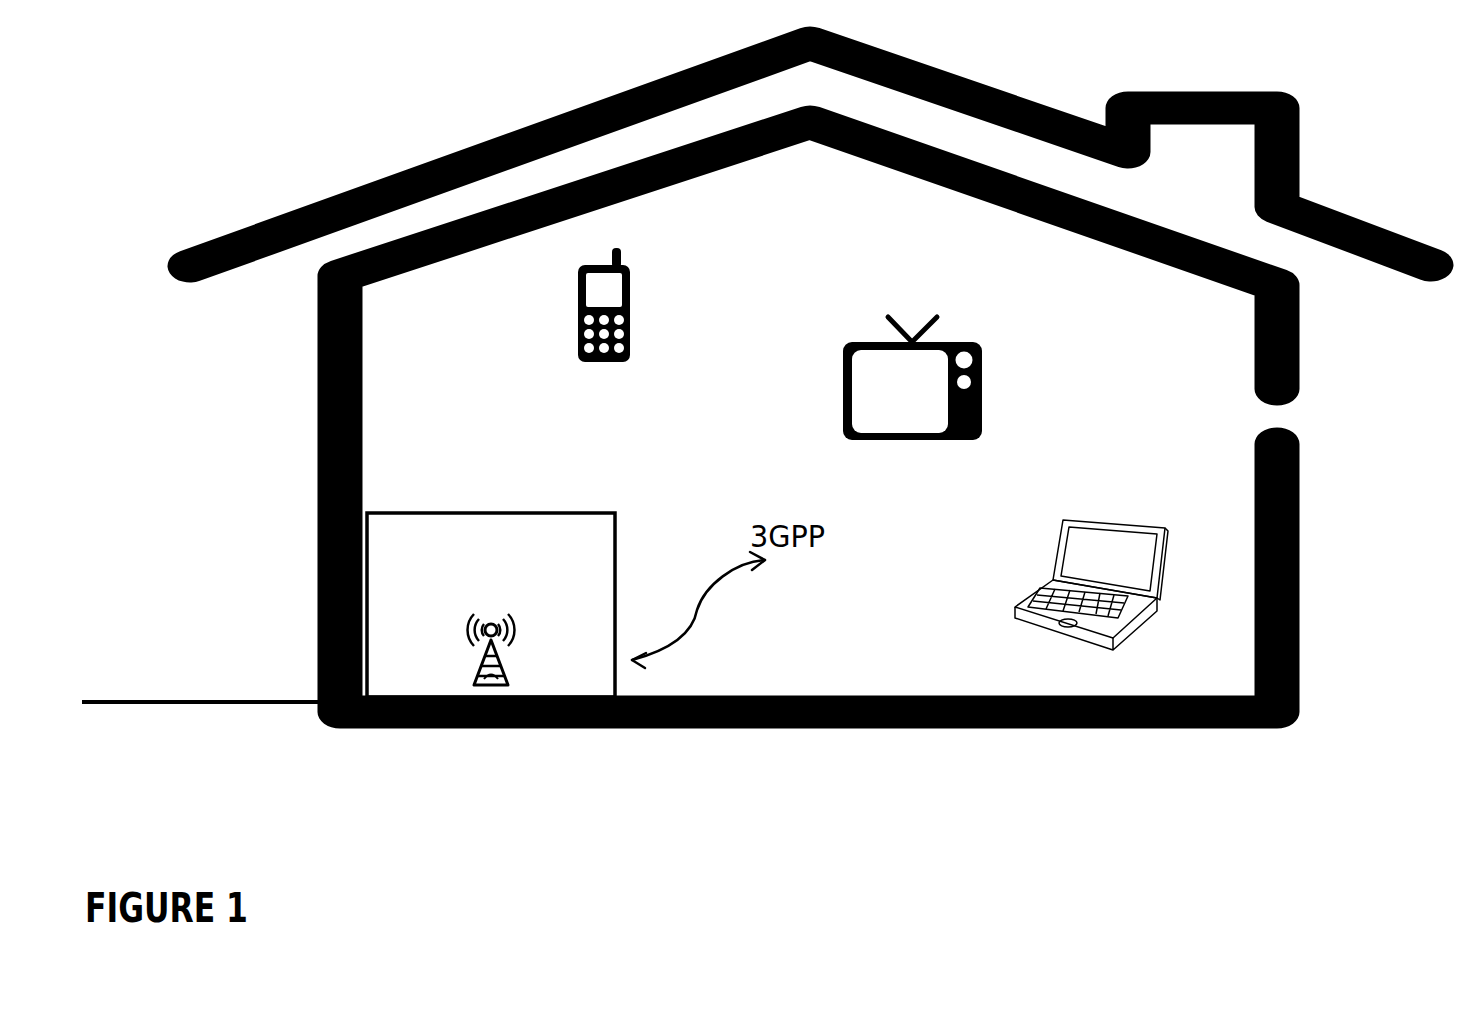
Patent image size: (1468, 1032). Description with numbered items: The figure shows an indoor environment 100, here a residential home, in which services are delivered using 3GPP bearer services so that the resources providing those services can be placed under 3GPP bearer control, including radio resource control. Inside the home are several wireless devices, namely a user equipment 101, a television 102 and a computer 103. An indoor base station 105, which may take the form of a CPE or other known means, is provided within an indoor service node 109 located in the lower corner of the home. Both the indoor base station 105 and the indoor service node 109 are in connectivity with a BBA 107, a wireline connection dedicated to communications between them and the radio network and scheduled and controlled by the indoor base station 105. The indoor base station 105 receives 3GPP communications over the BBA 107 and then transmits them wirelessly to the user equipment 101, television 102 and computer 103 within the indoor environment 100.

The indoor environment 100 is at (1292, 432).
The user equipment 101 is at (621, 262).
The television 102 is at (958, 342).
The computer 103 is at (1058, 520).
The indoor base station 105 is at (506, 622).
The BBA 107 is at (210, 700).
The indoor service node 109 is at (592, 513).